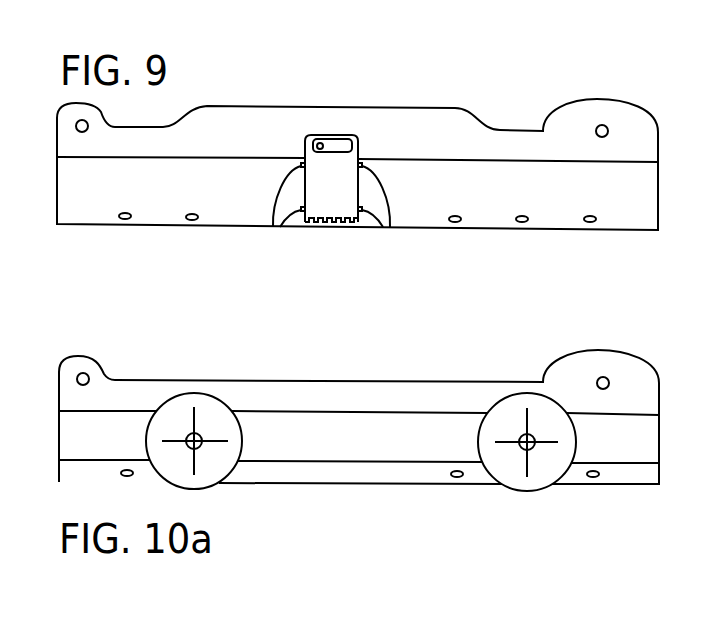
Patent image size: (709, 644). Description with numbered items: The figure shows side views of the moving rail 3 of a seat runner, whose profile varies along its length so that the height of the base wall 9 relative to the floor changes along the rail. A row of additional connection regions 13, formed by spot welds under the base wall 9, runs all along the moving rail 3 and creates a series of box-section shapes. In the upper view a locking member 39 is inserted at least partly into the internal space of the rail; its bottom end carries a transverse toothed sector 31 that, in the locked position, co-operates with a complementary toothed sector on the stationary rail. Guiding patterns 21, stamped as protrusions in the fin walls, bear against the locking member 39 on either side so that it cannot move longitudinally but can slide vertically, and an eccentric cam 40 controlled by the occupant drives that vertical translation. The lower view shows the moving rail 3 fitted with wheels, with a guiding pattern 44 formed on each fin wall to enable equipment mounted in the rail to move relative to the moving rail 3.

In FIG. 9, the moving rail 3 is at (543, 82).
In FIG. 10a, the moving rail 3 is at (295, 506).
In FIG. 10a, the base wall 9 is at (385, 412).
In FIG. 9, the additional connection regions 13 is at (523, 222).
In FIG. 10a, the additional connection regions 13 is at (457, 478).
In FIG. 9, the guiding patterns 21 is at (273, 227).
In FIG. 9, the toothed sector 31 is at (340, 223).
In FIG. 9, the locking member 39 is at (320, 173).
In FIG. 9, the eccentric cam 40 is at (322, 147).
In FIG. 10a, the guiding pattern 44 is at (192, 436).